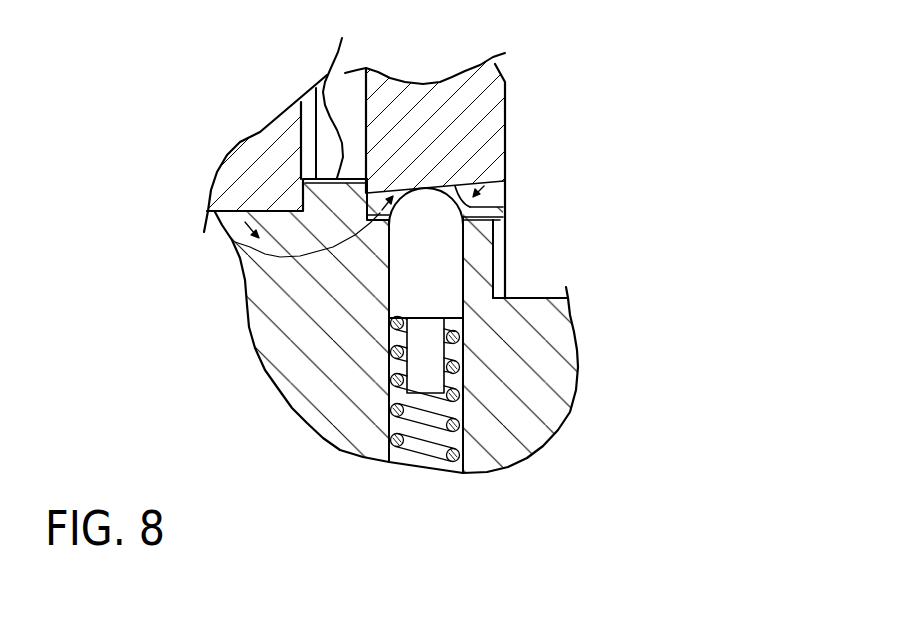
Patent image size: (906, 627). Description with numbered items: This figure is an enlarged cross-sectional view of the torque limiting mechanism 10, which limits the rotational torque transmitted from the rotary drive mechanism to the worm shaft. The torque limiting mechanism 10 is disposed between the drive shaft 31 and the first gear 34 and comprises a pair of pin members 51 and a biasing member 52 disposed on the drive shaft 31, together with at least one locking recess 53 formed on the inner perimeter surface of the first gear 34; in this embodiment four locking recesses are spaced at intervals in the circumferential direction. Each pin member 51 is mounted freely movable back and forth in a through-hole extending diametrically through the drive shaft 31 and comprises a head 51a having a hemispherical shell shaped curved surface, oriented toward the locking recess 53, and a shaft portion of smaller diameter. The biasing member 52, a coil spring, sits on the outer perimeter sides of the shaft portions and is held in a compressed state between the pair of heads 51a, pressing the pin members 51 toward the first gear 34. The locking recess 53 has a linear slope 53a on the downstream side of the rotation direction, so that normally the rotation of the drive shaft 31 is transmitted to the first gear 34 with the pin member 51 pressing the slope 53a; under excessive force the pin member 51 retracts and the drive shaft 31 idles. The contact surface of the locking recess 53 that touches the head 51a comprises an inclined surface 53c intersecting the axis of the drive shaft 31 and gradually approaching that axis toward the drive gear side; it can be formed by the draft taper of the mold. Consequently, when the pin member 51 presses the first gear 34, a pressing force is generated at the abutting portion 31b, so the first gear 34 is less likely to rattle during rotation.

The torque limiting mechanism 10 is at (579, 361).
The drive shaft 31 is at (247, 153).
The abutting portion 31b is at (354, 91).
The first gear 34 is at (491, 160).
The pin member 51 is at (554, 279).
The head 51a is at (534, 253).
The biasing member 52 is at (528, 389).
The locking recess 53 is at (326, 326).
The slope 53a is at (303, 233).
The inclined surface 53c is at (551, 181).